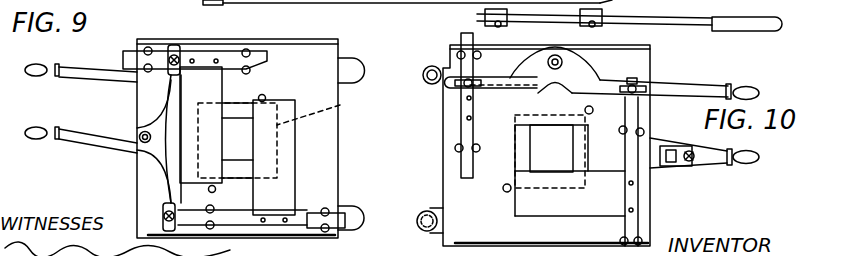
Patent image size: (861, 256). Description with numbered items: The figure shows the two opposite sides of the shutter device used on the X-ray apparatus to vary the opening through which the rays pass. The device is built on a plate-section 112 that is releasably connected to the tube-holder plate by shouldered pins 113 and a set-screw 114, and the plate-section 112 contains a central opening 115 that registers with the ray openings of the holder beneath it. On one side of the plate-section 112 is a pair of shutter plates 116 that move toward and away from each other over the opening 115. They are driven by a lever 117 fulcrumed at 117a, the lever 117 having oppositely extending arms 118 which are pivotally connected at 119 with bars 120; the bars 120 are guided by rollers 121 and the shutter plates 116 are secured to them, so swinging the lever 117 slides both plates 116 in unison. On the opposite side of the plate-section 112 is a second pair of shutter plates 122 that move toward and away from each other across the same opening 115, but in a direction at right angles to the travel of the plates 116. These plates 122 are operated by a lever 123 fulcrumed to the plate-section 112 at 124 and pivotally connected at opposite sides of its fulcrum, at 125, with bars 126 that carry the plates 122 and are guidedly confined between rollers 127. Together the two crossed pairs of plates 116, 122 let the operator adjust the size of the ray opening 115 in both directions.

In FIG. 9, the plate-section 112 is at (327, 152).
In FIG. 10, the shouldered pins 113 is at (430, 67).
In FIG. 10, the set-screw 114 is at (689, 145).
In FIG. 9, the central opening 115 is at (340, 105).
In FIG. 9, the shutter plates 116 is at (237, 141).
In FIG. 9, the lever 117 is at (68, 129).
In FIG. 9, the fulcrum 117a is at (138, 128).
In FIG. 9, the oppositely extending arms 118 is at (173, 80).
In FIG. 9, the pivotal connection 119 is at (176, 58).
In FIG. 9, the bars 120 is at (228, 62).
In FIG. 9, the rollers 121 is at (146, 66).
In FIG. 10, the shutter plates 122 is at (561, 131).
In FIG. 10, the lever 123 is at (703, 88).
In FIG. 10, the fulcrum 124 is at (555, 55).
In FIG. 10, the pivotal connections 125 is at (463, 85).
In FIG. 10, the bars 126 is at (461, 125).
In FIG. 10, the rollers 127 is at (477, 51).